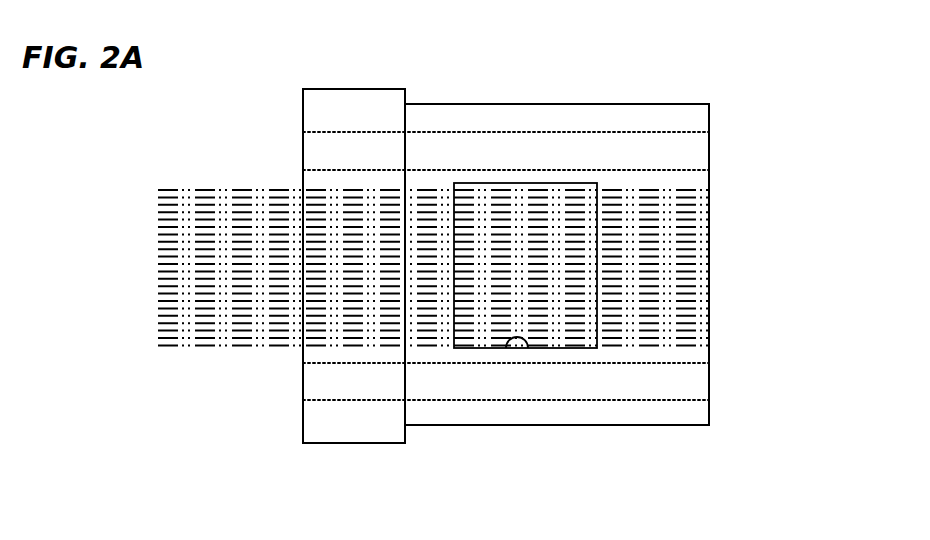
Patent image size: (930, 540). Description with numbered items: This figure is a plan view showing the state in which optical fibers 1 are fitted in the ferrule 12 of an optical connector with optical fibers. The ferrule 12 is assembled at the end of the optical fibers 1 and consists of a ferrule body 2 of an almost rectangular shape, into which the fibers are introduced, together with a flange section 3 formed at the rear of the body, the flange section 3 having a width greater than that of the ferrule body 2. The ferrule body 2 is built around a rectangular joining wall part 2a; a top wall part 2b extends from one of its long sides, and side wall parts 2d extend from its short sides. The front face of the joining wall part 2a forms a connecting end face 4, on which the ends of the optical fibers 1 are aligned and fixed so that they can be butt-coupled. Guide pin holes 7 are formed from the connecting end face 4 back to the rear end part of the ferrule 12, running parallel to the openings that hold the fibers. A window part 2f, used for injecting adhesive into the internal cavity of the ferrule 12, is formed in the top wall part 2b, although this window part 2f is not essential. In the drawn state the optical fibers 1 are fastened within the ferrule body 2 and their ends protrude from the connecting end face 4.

The optical fibers 1 is at (275, 333).
The ferrule body 2 is at (660, 425).
The joining wall part 2a is at (709, 408).
The top wall part 2b is at (628, 110).
The side wall parts 2d is at (573, 104).
The window part 2f is at (504, 348).
The flange section 3 is at (383, 443).
The connecting end face 4 is at (709, 350).
The guide pin holes 7 is at (702, 153).
The ferrule 12 is at (717, 78).